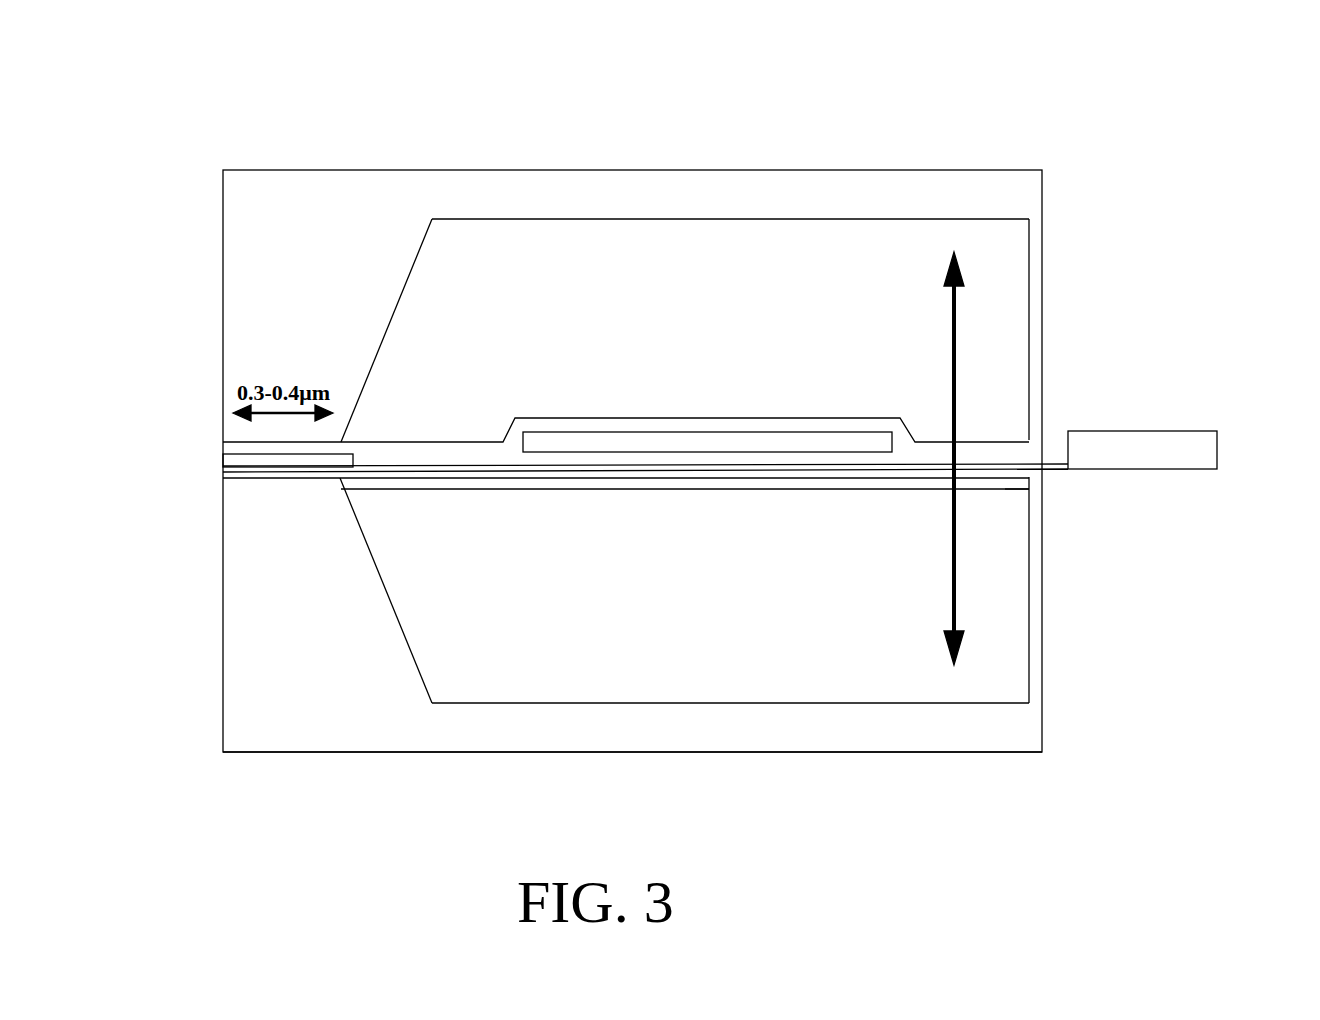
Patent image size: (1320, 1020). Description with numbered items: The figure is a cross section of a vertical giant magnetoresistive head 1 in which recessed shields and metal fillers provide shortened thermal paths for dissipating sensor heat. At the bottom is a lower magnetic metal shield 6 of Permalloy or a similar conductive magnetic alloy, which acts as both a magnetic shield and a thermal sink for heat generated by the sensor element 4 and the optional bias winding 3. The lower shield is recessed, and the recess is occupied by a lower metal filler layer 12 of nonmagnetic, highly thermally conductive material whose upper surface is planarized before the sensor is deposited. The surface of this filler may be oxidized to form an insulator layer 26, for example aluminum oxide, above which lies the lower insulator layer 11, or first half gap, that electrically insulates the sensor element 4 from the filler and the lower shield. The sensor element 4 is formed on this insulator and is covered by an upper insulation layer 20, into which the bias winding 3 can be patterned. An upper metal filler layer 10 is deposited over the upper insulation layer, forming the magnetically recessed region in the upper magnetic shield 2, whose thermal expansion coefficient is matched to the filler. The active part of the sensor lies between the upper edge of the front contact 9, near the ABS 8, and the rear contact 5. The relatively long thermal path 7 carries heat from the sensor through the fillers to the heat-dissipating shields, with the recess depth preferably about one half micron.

The vertical giant magnetoresistive head 1 is at (1080, 65).
The upper magnetic shield 2 is at (560, 195).
The bias winding 3 is at (878, 442).
The sensor element 4 is at (442, 473).
The rear contact 5 is at (1217, 440).
The lower magnetic metal shield 6 is at (867, 725).
The thermal path 7 is at (960, 335).
The ABS 8 is at (213, 478).
The front contact 9 is at (223, 455).
The upper metal filler layer 10 is at (626, 360).
The lower insulator layer 11 is at (1005, 488).
The lower metal filler layer 12 is at (684, 590).
The upper insulation layer 20 is at (1020, 452).
The insulator layer 26 is at (693, 489).